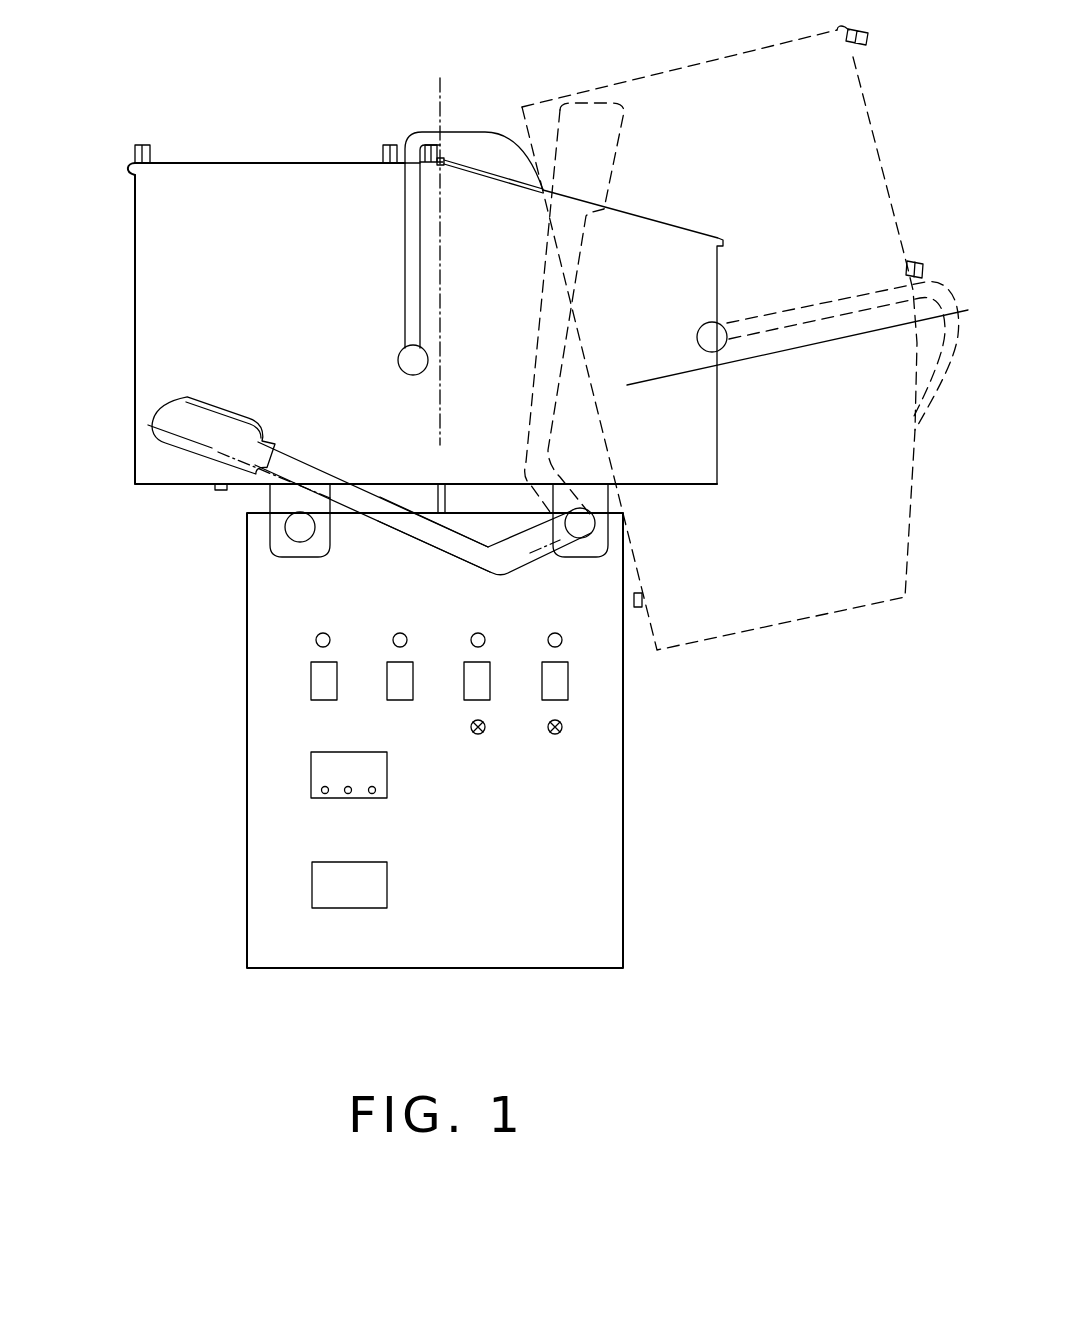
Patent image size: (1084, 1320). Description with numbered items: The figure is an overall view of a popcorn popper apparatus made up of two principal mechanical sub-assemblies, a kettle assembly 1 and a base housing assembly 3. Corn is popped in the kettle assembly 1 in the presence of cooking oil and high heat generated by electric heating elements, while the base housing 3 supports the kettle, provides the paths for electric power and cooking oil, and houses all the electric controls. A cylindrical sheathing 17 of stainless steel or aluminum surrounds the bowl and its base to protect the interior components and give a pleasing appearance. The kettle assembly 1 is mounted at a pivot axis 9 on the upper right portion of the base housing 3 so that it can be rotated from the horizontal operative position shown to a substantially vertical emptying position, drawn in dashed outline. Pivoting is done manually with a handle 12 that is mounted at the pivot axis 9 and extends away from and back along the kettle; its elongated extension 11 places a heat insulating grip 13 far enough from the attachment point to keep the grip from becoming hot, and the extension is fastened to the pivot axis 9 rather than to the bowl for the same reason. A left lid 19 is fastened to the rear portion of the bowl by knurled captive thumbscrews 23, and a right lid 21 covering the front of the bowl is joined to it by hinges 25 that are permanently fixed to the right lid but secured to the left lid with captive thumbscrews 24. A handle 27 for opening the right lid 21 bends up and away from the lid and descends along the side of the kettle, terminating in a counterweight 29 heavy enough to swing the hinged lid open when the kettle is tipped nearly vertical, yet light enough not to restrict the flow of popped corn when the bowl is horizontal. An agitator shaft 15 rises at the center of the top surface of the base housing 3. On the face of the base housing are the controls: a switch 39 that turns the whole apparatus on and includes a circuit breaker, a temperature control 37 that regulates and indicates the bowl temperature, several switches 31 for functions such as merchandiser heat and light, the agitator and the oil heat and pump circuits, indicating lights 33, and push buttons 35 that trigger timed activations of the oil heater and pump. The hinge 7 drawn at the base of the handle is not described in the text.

The kettle assembly 1 is at (268, 246).
The base housing assembly 3 is at (483, 896).
The pivot hinge 7 is at (593, 490).
The pivot axis 9 is at (287, 505).
The elongated extension 11 is at (417, 553).
The handle 12 is at (350, 493).
The grip 13 is at (205, 424).
The agitator shaft 15 is at (447, 498).
The cylindrical sheathing 17 is at (135, 400).
The left lid 19 is at (257, 163).
The right lid 21 is at (682, 228).
The captive thumbscrews 23 is at (146, 145).
The captive thumbscrews 24 is at (438, 155).
The hinges 25 is at (488, 170).
The handle 27 is at (405, 262).
The counterweight 29 is at (398, 357).
The switches 31 is at (328, 701).
The indicating lights 33 is at (322, 633).
The push buttons 35 is at (478, 735).
The temperature control 37 is at (347, 800).
The switch 39 is at (347, 910).